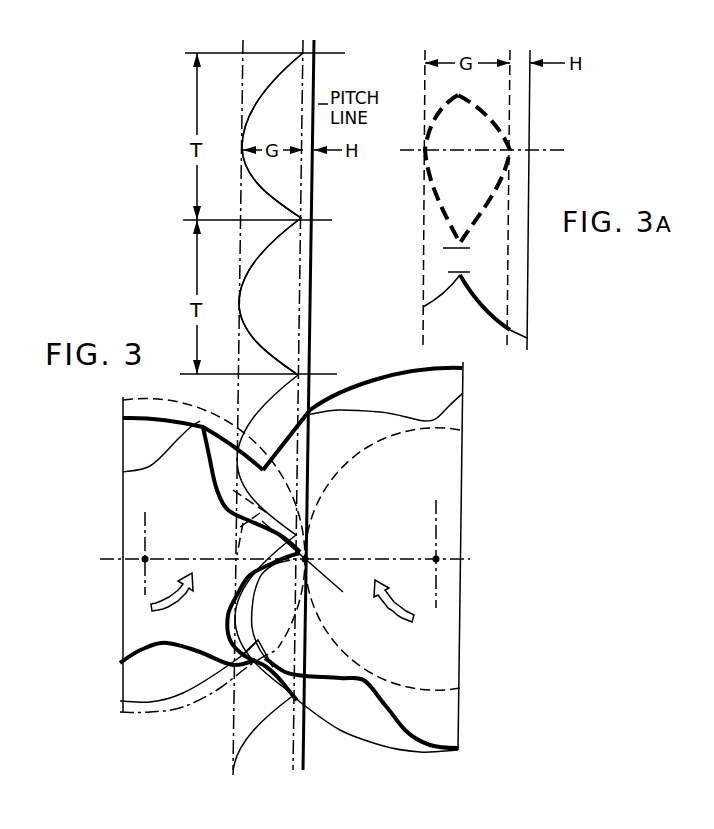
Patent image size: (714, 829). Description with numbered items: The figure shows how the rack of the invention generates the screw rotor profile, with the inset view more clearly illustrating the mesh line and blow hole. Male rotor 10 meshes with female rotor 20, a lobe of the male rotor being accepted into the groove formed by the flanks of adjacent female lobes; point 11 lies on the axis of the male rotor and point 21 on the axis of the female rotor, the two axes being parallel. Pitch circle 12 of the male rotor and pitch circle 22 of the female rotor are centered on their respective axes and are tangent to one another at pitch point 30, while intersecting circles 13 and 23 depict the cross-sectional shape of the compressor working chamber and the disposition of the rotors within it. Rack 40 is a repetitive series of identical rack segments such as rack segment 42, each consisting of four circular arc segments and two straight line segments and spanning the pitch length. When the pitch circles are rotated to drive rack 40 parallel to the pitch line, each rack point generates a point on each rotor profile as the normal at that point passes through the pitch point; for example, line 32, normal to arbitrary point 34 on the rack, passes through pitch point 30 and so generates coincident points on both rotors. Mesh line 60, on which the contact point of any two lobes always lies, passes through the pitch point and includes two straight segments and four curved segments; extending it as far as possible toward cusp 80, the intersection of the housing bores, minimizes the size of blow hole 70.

In FIG. 3, the male rotor 10 is at (449, 729).
In FIG. 3, the point on the axis of the male rotor 11 is at (433, 556).
In FIG. 3, the pitch circle of male rotor 12 is at (342, 647).
In FIG. 3, the intersecting circle 13 is at (328, 724).
In FIG. 3, the female rotor 20 is at (192, 636).
In FIG. 3, the point on the axis of the female rotor 21 is at (146, 557).
In FIG. 3, the pitch circle of female rotor 22 is at (176, 712).
In FIG. 3, the intersecting circle 23 is at (141, 705).
In FIG. 3, the pitch point 30 is at (310, 557).
In FIG. 3, the line normal to the rack 32 is at (330, 575).
In FIG. 3, the arbitrary point on rack 34 is at (302, 543).
In FIG. 3, the rack 40 is at (248, 313).
In FIG. 3, the rack segment 42 is at (268, 102).
In FIG. 3, the mesh line 60 is at (236, 551).
In FIG. 3A, the mesh line 60 is at (425, 192).
In FIG. 3A, the blow hole 70 is at (500, 255).
In FIG. 3, the cusp 80 is at (253, 668).
In FIG. 3A, the cusp 80 is at (460, 280).